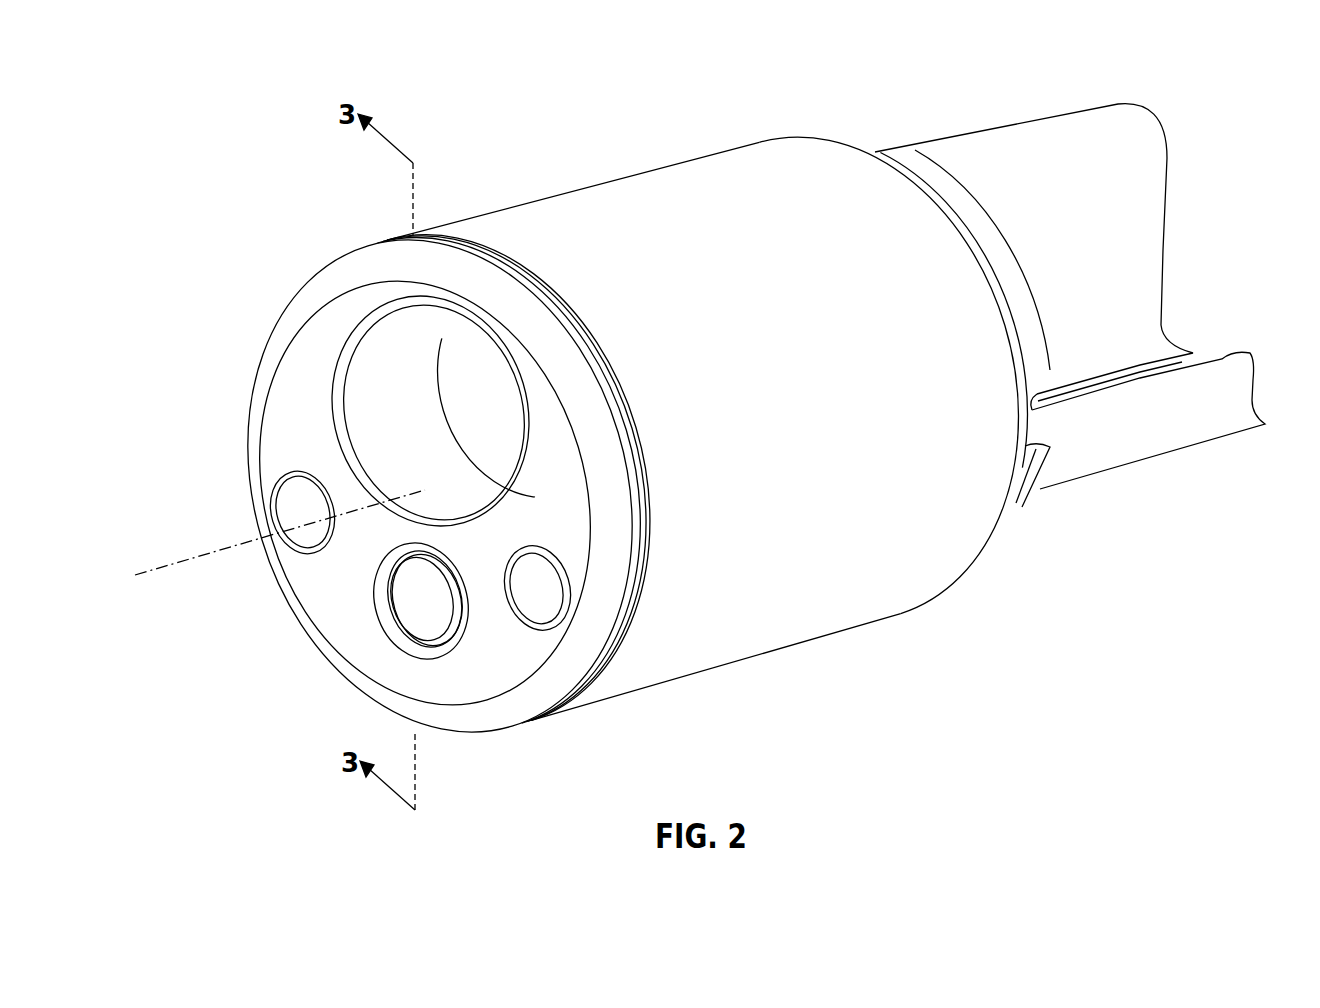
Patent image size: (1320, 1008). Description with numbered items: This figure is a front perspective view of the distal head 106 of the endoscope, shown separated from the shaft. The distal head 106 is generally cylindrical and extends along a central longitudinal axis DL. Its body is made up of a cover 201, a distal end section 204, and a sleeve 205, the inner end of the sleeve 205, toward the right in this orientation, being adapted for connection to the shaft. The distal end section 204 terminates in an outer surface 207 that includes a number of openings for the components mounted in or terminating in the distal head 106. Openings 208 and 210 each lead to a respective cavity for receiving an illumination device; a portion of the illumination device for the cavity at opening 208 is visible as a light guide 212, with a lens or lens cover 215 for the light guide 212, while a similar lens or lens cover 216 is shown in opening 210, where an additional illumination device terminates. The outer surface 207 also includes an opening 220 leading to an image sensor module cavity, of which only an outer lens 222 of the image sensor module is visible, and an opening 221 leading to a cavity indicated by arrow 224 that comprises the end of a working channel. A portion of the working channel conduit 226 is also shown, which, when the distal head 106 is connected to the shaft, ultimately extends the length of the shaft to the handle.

The distal head 106 is at (545, 181).
The cover 201 is at (693, 175).
The distal end section 204 is at (347, 280).
The sleeve 205 is at (905, 167).
The outer surface 207 is at (413, 685).
The opening 208 is at (521, 623).
The opening 210 is at (302, 473).
The light guide 212 is at (1225, 370).
The lens or lens cover 215 is at (540, 594).
The lens or lens cover 216 is at (297, 497).
The opening 220 is at (372, 597).
The opening 221 is at (338, 392).
The outer lens 222 is at (410, 613).
The cavity 224 is at (402, 368).
The working channel conduit 226 is at (1050, 135).
The central longitudinal axis DL is at (190, 556).